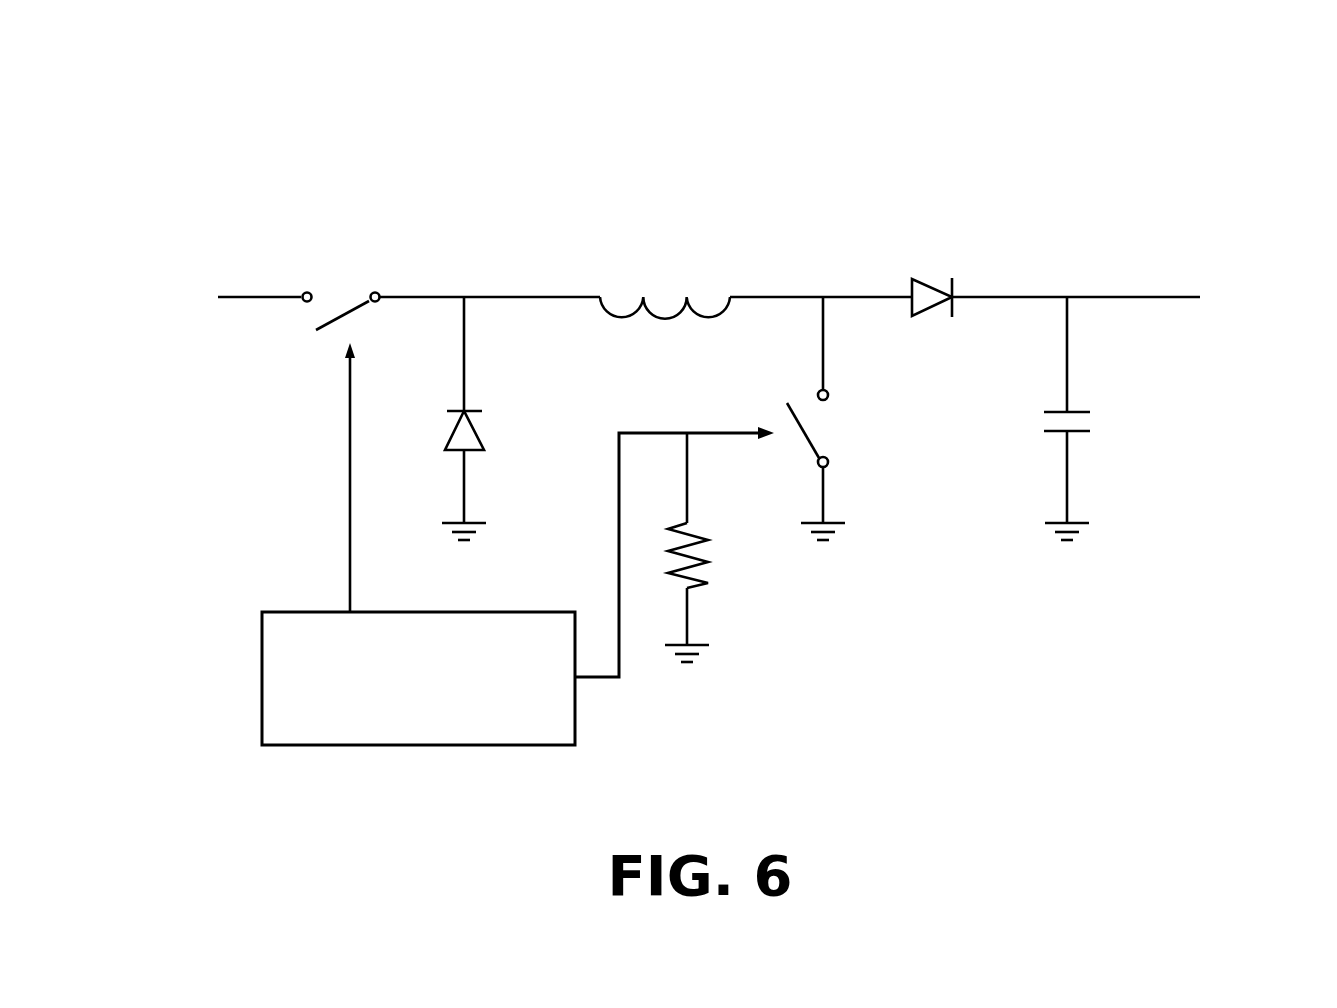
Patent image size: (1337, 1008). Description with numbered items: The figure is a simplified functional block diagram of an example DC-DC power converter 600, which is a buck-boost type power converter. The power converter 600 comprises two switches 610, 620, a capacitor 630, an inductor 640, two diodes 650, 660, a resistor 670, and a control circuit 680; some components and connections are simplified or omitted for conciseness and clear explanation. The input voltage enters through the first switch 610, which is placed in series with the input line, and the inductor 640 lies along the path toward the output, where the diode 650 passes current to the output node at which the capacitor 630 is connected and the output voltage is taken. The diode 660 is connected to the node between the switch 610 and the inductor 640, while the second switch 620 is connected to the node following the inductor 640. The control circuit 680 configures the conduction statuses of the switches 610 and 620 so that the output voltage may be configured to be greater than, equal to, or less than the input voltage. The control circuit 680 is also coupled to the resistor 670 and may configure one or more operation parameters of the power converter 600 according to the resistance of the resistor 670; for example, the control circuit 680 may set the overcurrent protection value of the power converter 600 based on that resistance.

The DC-DC power converter 600 is at (1213, 119).
The switch 610 is at (382, 277).
The switch 620 is at (863, 433).
The capacitor 630 is at (1120, 420).
The inductor 640 is at (676, 286).
The diode 650 is at (948, 261).
The diode 660 is at (520, 430).
The resistor 670 is at (743, 568).
The control circuit 680 is at (230, 636).